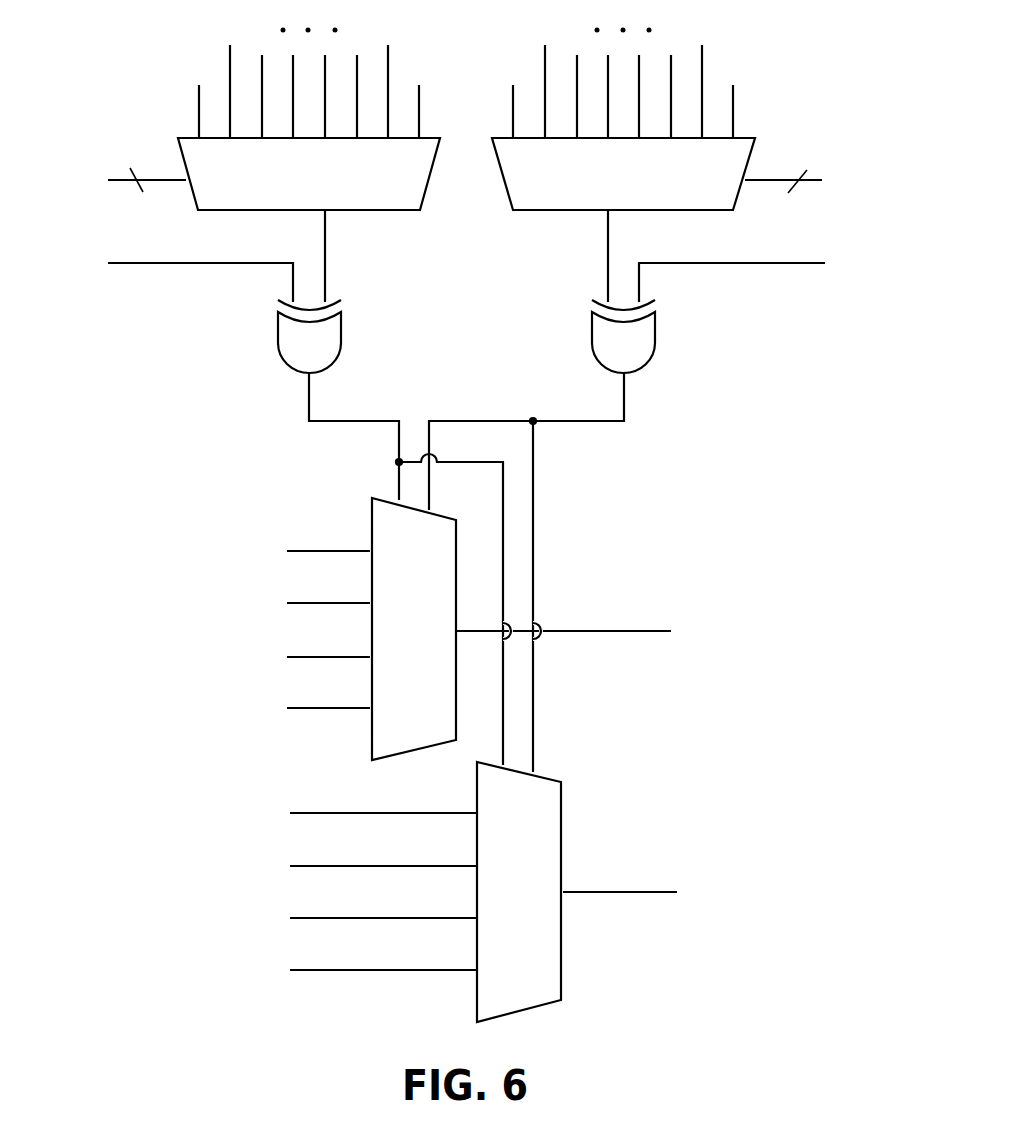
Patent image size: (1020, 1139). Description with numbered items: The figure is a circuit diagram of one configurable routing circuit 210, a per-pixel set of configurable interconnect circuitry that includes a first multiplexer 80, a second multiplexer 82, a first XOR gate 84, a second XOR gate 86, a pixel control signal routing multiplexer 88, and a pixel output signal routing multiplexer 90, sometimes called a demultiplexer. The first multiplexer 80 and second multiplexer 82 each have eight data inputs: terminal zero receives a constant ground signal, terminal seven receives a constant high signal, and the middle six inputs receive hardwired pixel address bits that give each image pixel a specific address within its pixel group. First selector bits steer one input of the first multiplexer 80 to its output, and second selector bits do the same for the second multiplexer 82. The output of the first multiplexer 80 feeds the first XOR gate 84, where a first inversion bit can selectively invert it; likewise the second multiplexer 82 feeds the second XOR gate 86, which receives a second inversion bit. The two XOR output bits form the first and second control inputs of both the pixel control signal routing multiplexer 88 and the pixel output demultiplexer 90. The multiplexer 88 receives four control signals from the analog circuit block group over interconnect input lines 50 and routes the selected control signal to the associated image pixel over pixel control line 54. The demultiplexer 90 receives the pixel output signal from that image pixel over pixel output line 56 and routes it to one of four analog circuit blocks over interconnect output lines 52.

The first multiplexer 80 is at (319, 195).
The second multiplexer 82 is at (634, 195).
The first XOR gate 84 is at (288, 347).
The second XOR gate 86 is at (643, 347).
The pixel control signal routing multiplexer 88 is at (429, 641).
The pixel output signal routing multiplexer 90 is at (534, 901).
The interconnect input lines 50 is at (362, 726).
The interconnect output lines 52 is at (467, 985).
The pixel control line 54 is at (632, 632).
The pixel output line 56 is at (632, 893).
The configurable routing circuit 210 is at (690, 1034).